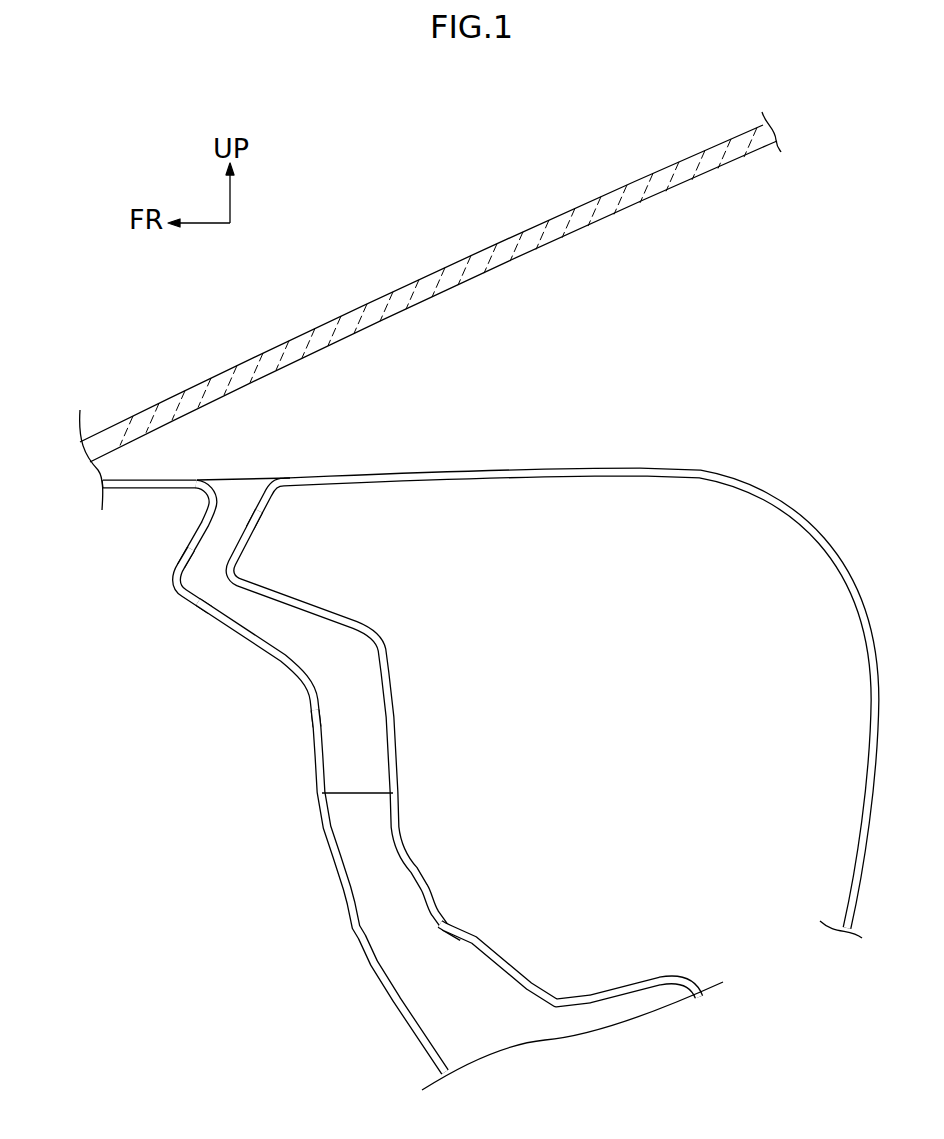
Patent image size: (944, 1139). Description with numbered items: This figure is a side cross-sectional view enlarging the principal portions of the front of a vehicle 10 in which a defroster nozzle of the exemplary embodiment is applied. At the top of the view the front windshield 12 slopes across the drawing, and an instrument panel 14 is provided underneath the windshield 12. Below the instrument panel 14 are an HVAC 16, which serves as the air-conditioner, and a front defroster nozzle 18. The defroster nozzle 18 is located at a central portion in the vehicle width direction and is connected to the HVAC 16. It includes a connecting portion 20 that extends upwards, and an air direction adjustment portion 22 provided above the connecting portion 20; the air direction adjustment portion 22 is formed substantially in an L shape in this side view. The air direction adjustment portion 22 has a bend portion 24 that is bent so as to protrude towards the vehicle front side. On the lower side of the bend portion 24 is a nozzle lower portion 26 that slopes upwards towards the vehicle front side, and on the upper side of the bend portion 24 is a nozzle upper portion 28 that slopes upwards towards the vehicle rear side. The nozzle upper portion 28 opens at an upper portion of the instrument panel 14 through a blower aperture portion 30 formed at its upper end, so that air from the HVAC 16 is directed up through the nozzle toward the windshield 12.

The vehicle 10 is at (430, 311).
The front windshield 12 is at (380, 297).
The instrument panel 14 is at (510, 470).
The HVAC 16 is at (473, 942).
The front defroster nozzle 18 is at (393, 706).
The connecting portion 20 is at (316, 775).
The air direction adjustment portion 22 is at (169, 603).
The bend portion 24 is at (176, 581).
The nozzle lower portion 26 is at (192, 609).
The nozzle upper portion 28 is at (181, 549).
The blower aperture portion 30 is at (207, 491).